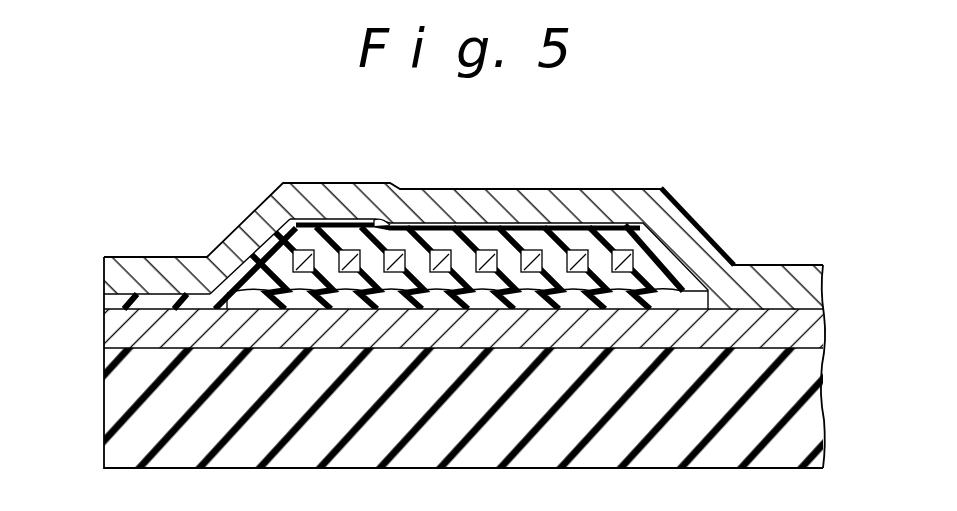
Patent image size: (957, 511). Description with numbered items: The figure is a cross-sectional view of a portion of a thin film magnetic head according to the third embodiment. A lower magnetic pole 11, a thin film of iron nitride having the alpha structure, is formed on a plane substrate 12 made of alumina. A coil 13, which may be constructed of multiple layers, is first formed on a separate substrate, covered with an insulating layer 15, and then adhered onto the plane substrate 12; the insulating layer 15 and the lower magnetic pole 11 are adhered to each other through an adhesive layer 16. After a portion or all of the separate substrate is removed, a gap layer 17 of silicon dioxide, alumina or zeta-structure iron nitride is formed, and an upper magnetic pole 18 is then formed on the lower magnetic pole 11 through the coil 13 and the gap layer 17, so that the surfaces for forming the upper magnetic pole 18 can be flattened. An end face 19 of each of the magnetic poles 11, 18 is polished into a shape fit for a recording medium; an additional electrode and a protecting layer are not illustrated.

The lower magnetic pole 11 is at (805, 339).
The plane substrate 12 is at (803, 425).
The coil 13 is at (593, 232).
The insulating layer 15 is at (657, 253).
The adhesive layer 16 is at (692, 302).
The gap layer 17 is at (378, 221).
The upper magnetic pole 18 is at (807, 280).
The end face 19 is at (104, 323).